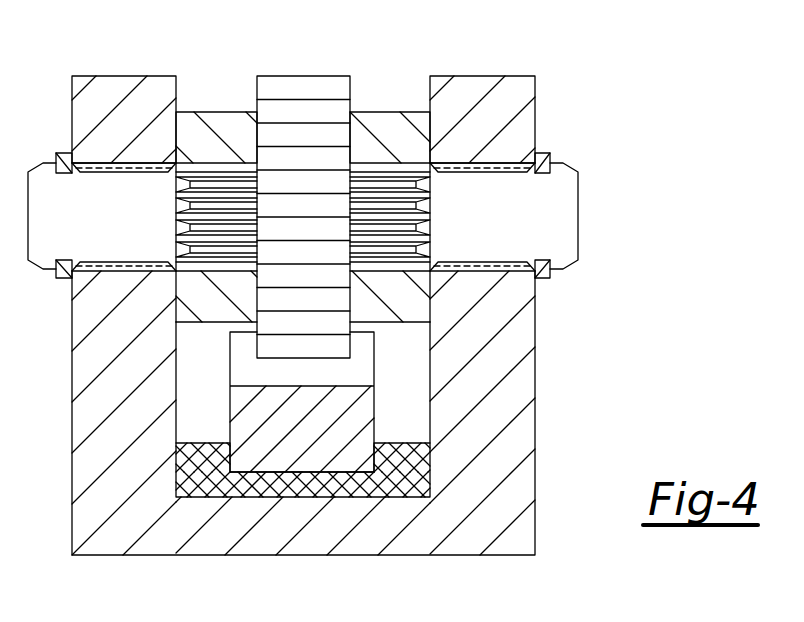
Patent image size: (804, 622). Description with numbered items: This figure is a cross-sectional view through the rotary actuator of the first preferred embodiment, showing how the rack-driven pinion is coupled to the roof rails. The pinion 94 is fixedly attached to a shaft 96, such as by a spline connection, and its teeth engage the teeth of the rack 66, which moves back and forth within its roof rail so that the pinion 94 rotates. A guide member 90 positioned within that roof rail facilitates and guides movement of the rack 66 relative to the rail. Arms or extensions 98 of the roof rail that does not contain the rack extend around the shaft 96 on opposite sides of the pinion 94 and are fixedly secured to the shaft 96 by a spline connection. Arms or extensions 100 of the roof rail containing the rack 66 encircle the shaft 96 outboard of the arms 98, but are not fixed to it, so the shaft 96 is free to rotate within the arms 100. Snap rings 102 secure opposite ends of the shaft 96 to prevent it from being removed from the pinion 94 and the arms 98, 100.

The rack 66 is at (293, 460).
The guide member 90 is at (400, 492).
The pinion 94 is at (296, 88).
The shaft 96 is at (565, 218).
The arms or extensions 98 is at (218, 118).
The arms or extensions 100 is at (125, 88).
The snap rings 102 is at (62, 282).